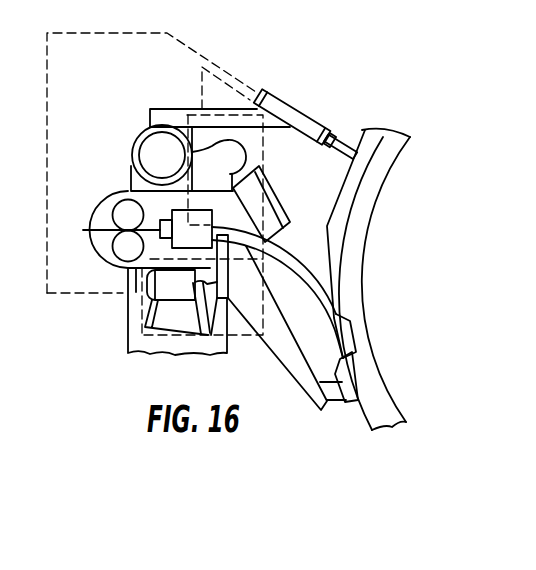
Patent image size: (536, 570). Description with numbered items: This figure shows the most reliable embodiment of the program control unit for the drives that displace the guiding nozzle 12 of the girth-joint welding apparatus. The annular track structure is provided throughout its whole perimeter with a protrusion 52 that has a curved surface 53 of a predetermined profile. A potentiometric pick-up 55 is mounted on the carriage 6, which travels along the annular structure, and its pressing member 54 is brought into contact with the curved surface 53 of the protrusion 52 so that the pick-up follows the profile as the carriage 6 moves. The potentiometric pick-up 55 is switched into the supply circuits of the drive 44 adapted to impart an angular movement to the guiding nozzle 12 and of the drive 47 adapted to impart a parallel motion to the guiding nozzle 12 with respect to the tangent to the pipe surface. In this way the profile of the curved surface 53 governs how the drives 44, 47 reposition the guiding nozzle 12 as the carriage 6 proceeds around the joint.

The drive adapted to impart an angular movement 44 is at (197, 118).
The carriage 6 is at (268, 150).
The potentiometric pick-up 55 is at (293, 114).
The pressing member 54 is at (338, 143).
The curved surface 53 is at (337, 189).
The protrusion 52 is at (335, 235).
The guiding nozzle 12 is at (318, 297).
The drive adapted to impart a parallel motion 47 is at (150, 334).